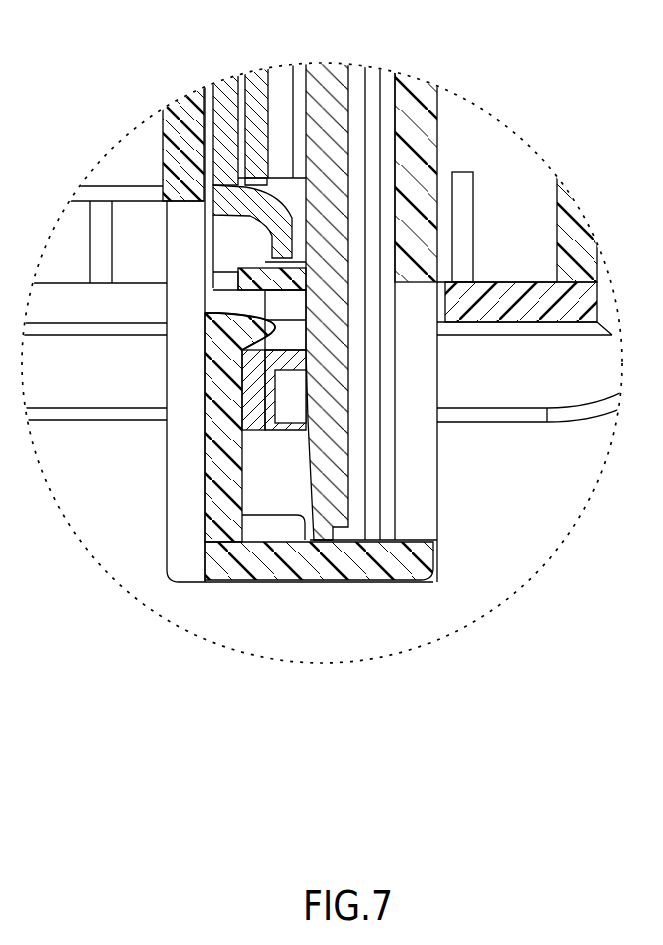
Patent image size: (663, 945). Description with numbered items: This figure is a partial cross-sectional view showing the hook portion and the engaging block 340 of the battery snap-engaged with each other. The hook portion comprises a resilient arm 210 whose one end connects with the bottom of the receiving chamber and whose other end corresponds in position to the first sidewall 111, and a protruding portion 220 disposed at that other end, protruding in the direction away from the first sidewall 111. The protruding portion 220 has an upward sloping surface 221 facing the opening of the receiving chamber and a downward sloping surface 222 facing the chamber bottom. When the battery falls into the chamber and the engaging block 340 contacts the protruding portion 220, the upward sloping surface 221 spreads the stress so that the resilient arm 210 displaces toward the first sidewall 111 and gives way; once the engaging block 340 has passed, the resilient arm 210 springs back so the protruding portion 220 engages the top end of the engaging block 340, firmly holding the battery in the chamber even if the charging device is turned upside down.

The first sidewall 111 is at (205, 122).
The upward sloping surface 221 is at (236, 315).
The resilient arm 210 is at (217, 493).
The engaging block 340 is at (258, 410).
The downward sloping surface 222 is at (268, 352).
The protruding portion 220 is at (263, 335).